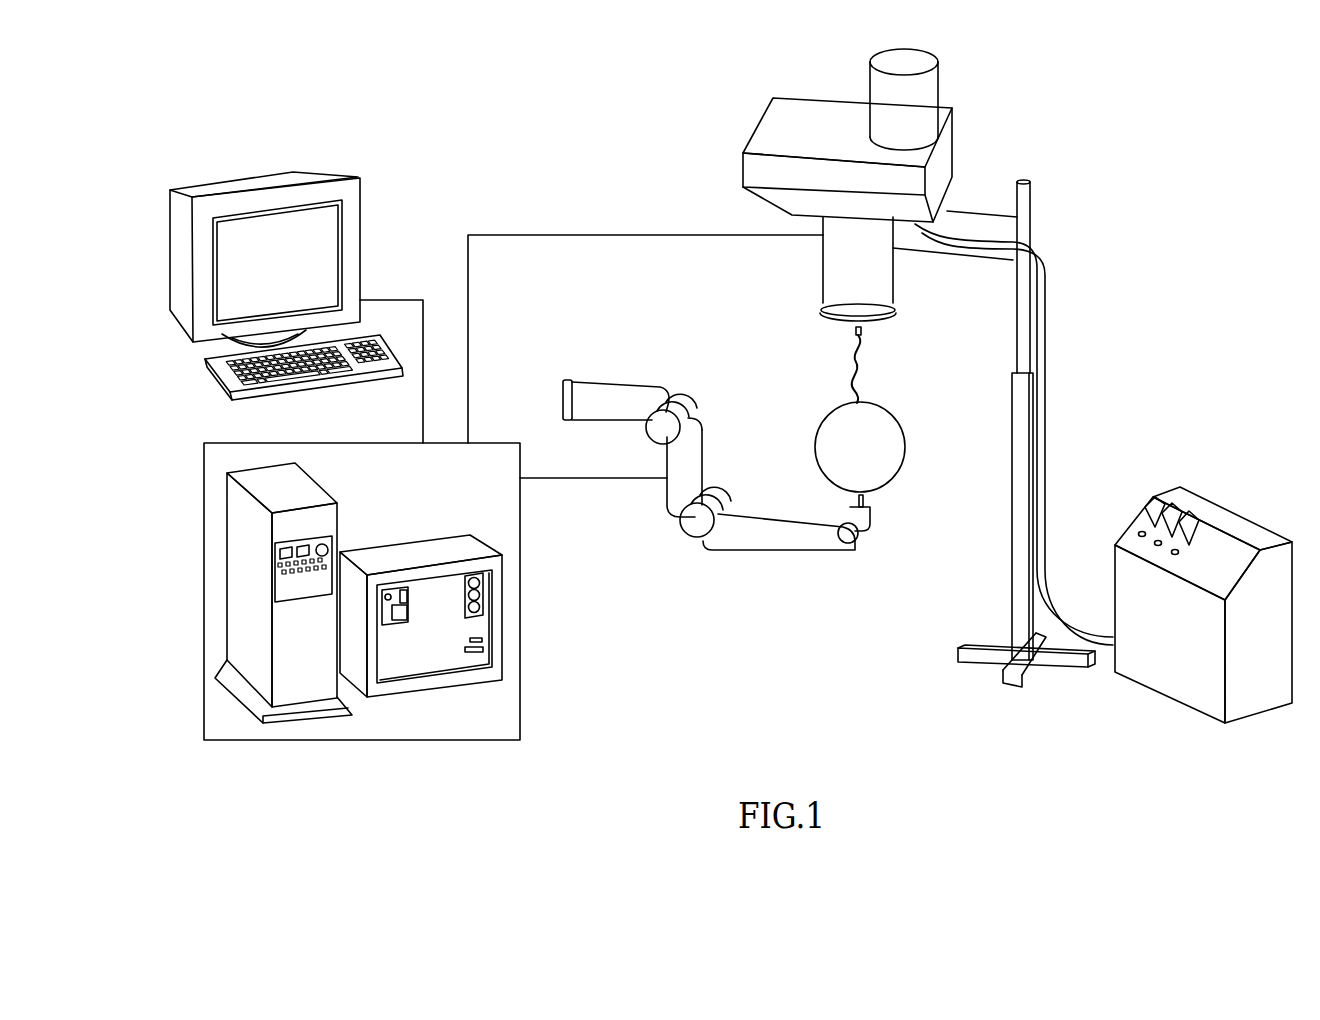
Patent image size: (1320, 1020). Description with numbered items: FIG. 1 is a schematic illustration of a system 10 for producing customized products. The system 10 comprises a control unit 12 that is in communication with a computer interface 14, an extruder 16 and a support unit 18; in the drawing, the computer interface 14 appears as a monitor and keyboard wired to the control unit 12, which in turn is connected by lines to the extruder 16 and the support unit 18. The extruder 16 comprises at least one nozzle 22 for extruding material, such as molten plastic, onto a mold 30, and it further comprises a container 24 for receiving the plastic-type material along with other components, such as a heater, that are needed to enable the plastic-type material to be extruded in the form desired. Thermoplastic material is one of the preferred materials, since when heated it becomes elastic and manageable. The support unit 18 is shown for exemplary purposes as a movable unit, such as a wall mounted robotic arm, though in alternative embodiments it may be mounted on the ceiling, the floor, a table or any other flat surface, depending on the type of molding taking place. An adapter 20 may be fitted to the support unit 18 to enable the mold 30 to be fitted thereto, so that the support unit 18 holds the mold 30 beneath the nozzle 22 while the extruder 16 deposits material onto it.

The system 10 is at (408, 112).
The control unit 12 is at (522, 658).
The computer interface 14 is at (275, 198).
The extruder 16 is at (975, 223).
The support unit 18 is at (777, 550).
The adapter 20 is at (866, 500).
The nozzle 22 is at (847, 367).
The container 24 is at (908, 60).
The mold 30 is at (907, 447).